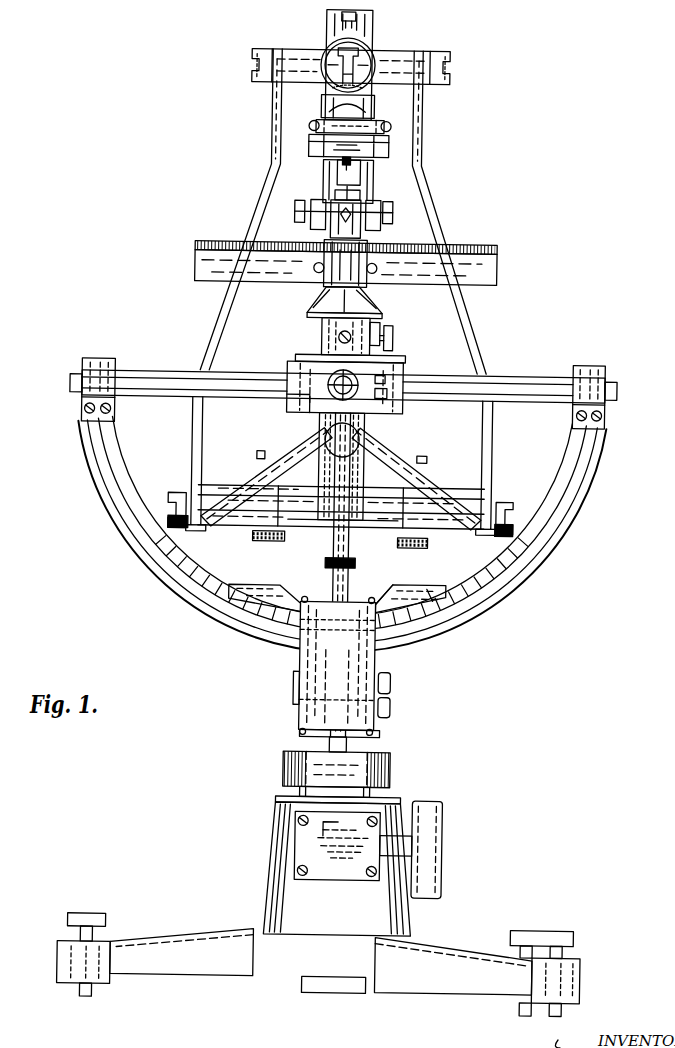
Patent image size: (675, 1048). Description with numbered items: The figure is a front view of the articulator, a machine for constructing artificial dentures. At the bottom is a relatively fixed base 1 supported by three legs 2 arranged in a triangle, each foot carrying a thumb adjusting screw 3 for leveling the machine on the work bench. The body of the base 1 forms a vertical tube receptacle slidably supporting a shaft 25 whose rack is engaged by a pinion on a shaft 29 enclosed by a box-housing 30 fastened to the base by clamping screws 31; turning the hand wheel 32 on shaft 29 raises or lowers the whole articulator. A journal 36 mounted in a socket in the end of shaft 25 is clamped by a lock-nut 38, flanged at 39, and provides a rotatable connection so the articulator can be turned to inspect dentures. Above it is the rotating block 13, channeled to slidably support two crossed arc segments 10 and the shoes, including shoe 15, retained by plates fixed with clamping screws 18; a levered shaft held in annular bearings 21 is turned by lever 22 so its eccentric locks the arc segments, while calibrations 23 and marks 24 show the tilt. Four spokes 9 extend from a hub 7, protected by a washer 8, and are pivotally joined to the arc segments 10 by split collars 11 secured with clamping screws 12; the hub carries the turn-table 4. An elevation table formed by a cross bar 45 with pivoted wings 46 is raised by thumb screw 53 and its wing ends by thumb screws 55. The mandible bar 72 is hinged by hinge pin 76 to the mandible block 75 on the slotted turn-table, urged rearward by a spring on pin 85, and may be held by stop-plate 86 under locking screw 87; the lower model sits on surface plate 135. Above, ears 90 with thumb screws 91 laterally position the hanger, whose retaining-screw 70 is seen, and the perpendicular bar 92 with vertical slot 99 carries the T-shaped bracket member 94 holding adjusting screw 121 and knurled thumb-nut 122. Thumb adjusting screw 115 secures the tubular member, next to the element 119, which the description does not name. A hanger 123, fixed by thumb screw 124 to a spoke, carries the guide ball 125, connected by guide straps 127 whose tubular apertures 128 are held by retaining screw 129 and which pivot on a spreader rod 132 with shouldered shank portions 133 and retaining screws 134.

The base 1 is at (282, 859).
The legs 2 is at (186, 939).
The thumb adjusting screws 3 is at (96, 917).
The turn-table 4 is at (321, 329).
The hub 7 is at (287, 401).
The washer 8 is at (400, 359).
The spokes 9 is at (170, 381).
The arc segments 10 is at (556, 486).
The split collars 11 is at (100, 363).
The clamping screws 12 is at (115, 411).
The rotating block 13 is at (308, 661).
The shoe 15 is at (284, 586).
The clamping screws 18 is at (381, 591).
The annular bearings 21 is at (395, 708).
The lever 22 is at (395, 684).
The calibrations 23 is at (432, 592).
The marks 24 is at (421, 590).
The shaft 25 is at (306, 791).
The shaft 29 is at (400, 801).
The box-housing 30 is at (340, 831).
The clamping screws 31 is at (305, 873).
The hand wheel 32 is at (449, 836).
The journal 36 is at (320, 738).
The lock-nut 38 is at (396, 773).
The flange 39 is at (370, 751).
The cross bar 45 is at (306, 490).
The elevation plates or wings 46 is at (258, 456).
The thumb adjusting screw 53 is at (358, 565).
The thumb-adjusting screws 55 is at (255, 541).
The retaining-screw 70 is at (332, 196).
The mandible bar 72 is at (495, 273).
The mandible block 75 is at (333, 301).
The hinge pin 76 is at (372, 272).
The pin 85 is at (338, 337).
The stop-plate 86 is at (380, 331).
The locking screw 87 is at (392, 341).
The ears 90 is at (308, 224).
The thumb adjusting screws 91 is at (292, 212).
The perpendicular bar 92 is at (321, 18).
The T-shaped bracket member 94 is at (380, 126).
The vertical slot 99 is at (334, 180).
The thumb adjusting screw 115 is at (350, 18).
The dial 119 is at (363, 44).
The adjusting screw 121 is at (362, 114).
The knurled thumb-nut 122 is at (378, 148).
The hanger 123 is at (398, 406).
The thumb adjusting screw 124 is at (400, 399).
The ball 125 is at (356, 441).
The guide straps 127 is at (268, 100).
The tubular apertures 128 is at (319, 53).
The retaining screw 129 is at (247, 70).
The spreader rod 132 is at (395, 524).
The shouldered shank portion 133 is at (201, 541).
The retaining screws 134 is at (179, 495).
The surface plate 135 is at (455, 250).